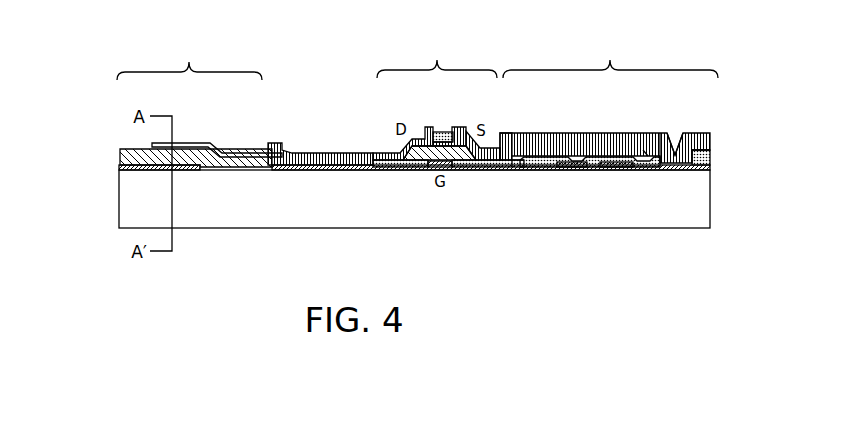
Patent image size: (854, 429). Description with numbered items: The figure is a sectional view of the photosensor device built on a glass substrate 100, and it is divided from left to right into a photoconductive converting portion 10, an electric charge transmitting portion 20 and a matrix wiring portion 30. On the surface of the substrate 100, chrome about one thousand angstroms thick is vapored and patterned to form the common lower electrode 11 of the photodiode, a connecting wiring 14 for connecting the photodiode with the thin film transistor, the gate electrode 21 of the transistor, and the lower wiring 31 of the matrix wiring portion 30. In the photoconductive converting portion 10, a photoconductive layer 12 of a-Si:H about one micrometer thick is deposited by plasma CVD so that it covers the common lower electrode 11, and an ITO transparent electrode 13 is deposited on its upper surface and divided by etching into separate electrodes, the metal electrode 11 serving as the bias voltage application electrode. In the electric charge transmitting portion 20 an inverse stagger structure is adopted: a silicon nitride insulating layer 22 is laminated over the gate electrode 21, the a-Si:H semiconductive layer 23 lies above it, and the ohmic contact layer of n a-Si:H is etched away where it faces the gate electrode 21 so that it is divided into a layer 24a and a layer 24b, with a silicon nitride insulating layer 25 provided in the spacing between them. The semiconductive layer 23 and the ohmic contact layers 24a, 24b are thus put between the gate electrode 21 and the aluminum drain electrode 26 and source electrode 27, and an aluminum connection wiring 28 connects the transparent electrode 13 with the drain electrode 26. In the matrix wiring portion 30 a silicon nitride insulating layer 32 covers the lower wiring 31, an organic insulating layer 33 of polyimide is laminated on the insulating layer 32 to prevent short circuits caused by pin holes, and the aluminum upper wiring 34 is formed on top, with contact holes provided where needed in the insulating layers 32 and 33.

The photoconductive converting portion 10 is at (189, 57).
The metal electrode 11 is at (121, 168).
The photoconductive layer 12 is at (124, 148).
The transparent electrode 13 is at (211, 143).
The connecting wiring 14 is at (301, 170).
The electric charge transmitting portion 20 is at (437, 56).
The gate electrode 21 is at (428, 168).
The insulating layer 22 is at (474, 168).
The semiconductive layer 23 is at (399, 154).
The ohmic contact layer 24a is at (428, 128).
The ohmic contact layer 24b is at (502, 134).
The insulating layer 25 is at (447, 132).
The drain electrode 26 is at (411, 140).
The source electrode 27 is at (458, 128).
The connection wiring 28 is at (297, 152).
The matrix wiring portion 30 is at (610, 56).
The lower wiring 31 is at (655, 168).
The insulating layer 32 is at (519, 168).
The organic insulating layer 33 is at (686, 133).
The upper wiring 34 is at (594, 133).
The substrate 100 is at (250, 218).